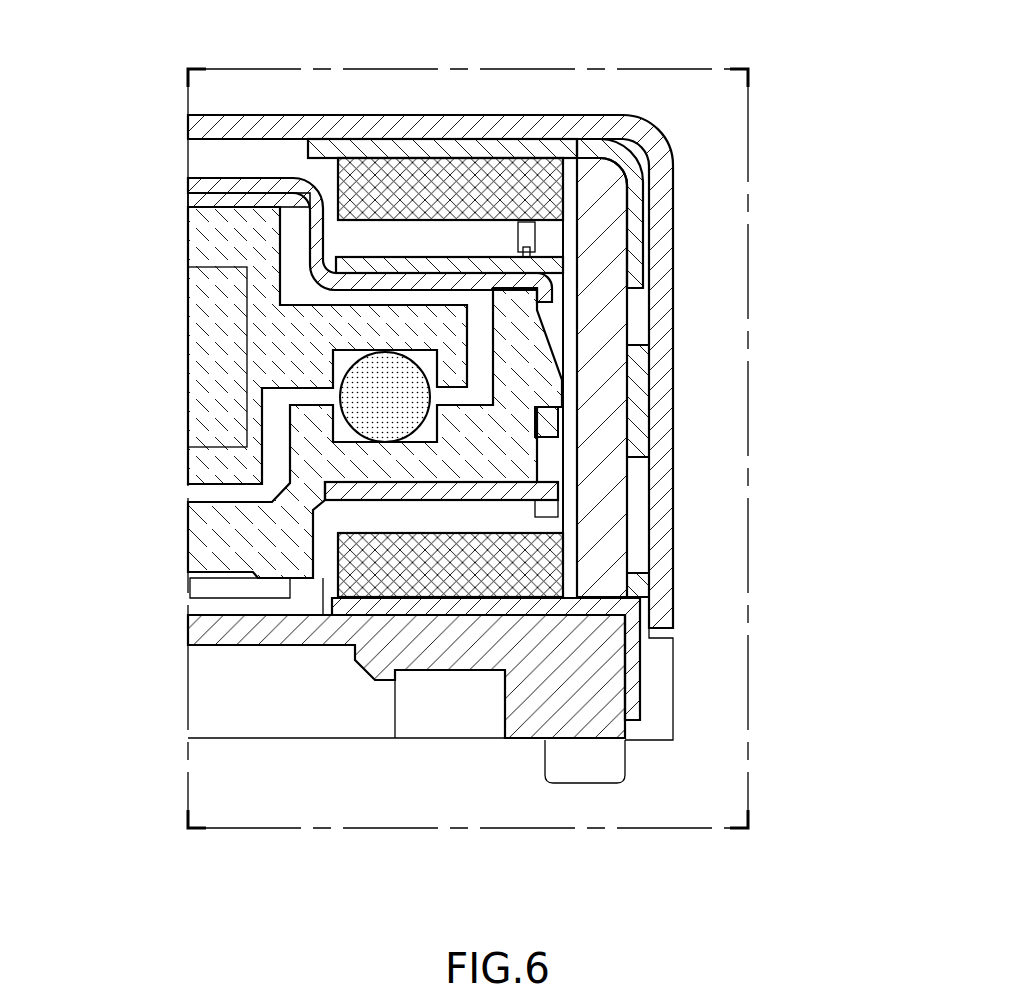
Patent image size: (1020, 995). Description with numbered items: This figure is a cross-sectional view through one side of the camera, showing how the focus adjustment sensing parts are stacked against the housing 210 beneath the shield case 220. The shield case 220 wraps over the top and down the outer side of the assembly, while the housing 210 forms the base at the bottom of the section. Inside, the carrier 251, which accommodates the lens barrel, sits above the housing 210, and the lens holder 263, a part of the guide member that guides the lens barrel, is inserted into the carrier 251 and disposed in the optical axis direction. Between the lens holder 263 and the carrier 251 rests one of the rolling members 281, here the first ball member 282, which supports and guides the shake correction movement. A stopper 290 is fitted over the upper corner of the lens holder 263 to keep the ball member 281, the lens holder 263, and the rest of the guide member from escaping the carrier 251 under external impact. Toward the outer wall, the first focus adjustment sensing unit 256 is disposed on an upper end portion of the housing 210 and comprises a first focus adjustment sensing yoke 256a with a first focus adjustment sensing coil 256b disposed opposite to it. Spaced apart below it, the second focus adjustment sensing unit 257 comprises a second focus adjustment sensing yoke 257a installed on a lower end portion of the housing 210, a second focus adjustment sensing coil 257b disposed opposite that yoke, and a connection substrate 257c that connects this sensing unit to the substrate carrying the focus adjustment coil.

The housing 210 is at (453, 643).
The shield case 220 is at (518, 127).
The carrier 251 is at (197, 540).
The first focus adjustment sensing unit 256 is at (601, 368).
The first focus adjustment sensing yoke 256a is at (557, 260).
The first focus adjustment sensing coil 256b is at (538, 192).
The second focus adjustment sensing unit 257 is at (570, 439).
The second focus adjustment sensing yoke 257a is at (548, 490).
The second focus adjustment sensing coil 257b is at (547, 563).
The connection substrate 257c is at (571, 604).
The lens holder 263 is at (243, 233).
The rolling members 281 is at (238, 396).
The first ball member 282 is at (368, 378).
The stopper 290 is at (290, 180).